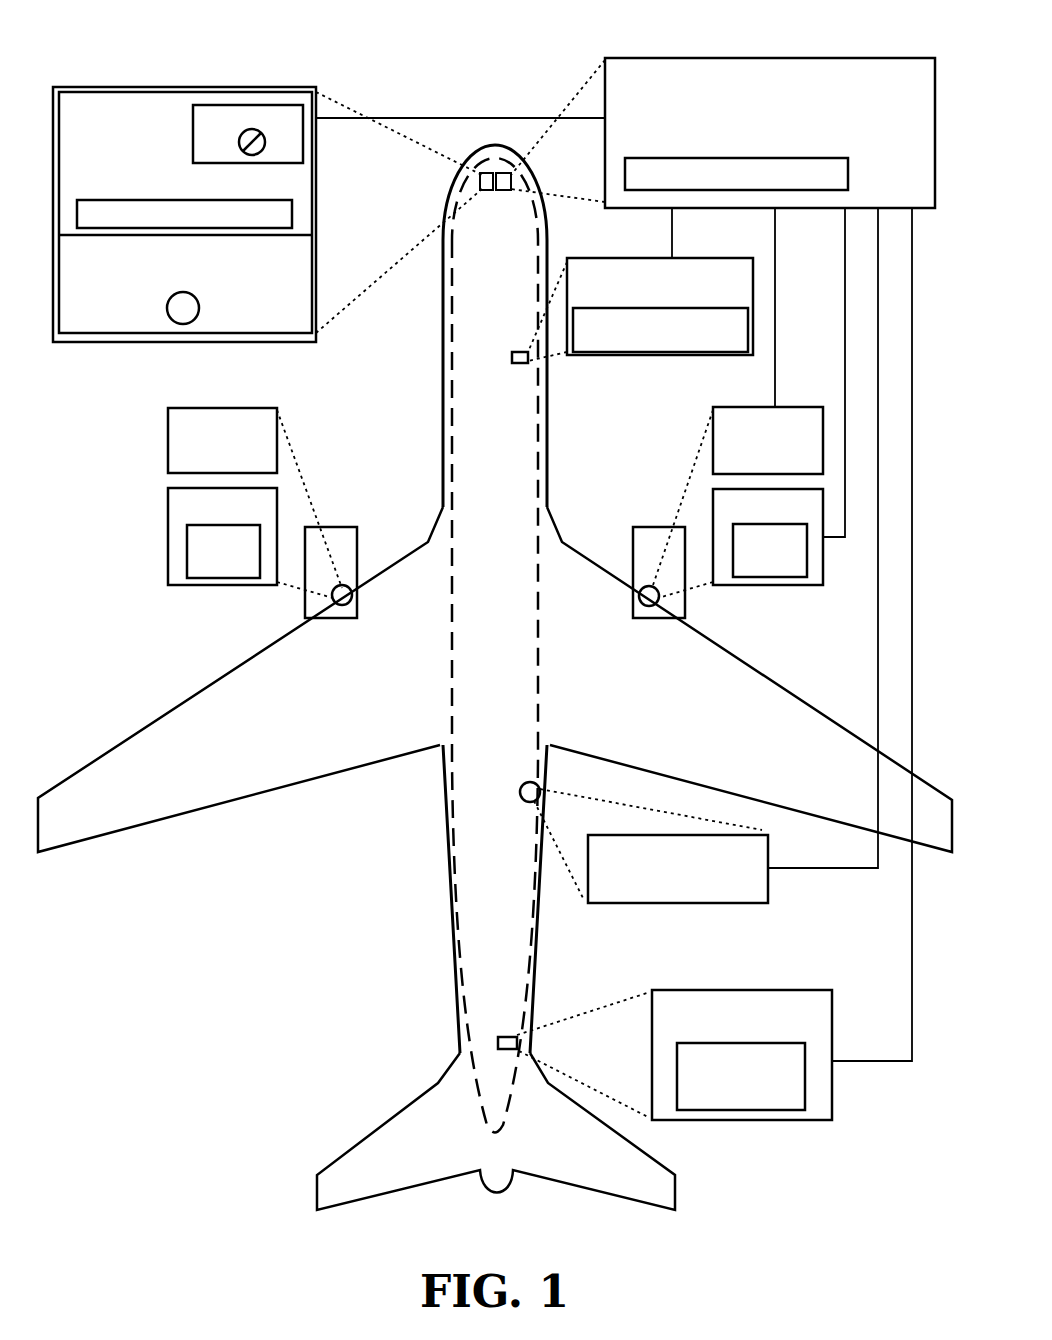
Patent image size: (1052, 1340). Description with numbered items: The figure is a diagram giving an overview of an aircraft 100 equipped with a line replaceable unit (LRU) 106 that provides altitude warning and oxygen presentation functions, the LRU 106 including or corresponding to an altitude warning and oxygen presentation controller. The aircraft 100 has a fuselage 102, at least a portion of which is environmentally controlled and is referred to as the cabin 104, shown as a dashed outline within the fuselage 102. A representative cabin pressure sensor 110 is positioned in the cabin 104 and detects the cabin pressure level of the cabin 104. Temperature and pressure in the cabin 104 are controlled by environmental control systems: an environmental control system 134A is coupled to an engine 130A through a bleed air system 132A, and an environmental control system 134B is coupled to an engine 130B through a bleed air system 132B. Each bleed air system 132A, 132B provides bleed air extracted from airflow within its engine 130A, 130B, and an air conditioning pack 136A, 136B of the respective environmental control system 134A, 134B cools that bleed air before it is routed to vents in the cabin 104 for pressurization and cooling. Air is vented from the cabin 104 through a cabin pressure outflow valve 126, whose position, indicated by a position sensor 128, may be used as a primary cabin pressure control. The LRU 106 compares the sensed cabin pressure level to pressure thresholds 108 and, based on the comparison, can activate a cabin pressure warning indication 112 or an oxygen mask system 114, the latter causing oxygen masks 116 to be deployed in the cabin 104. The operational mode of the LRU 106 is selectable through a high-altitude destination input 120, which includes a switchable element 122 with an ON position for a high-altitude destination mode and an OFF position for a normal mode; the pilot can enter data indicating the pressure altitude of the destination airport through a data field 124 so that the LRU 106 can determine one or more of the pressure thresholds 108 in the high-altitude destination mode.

The aircraft 100 is at (98, 20).
The fuselage 102 is at (443, 797).
The cabin 104 is at (457, 865).
The line replaceable unit (LRU) 106 is at (605, 58).
The pressure thresholds 108 is at (848, 172).
The cabin pressure sensor 110 is at (728, 903).
The cabin pressure warning indication 112 is at (188, 322).
The oxygen mask system 114 is at (623, 258).
The oxygen masks 116 is at (660, 352).
The high-altitude destination input 120 is at (110, 88).
The switchable element 122 is at (256, 135).
The data field 124 is at (292, 211).
The cabin pressure outflow valve 126 is at (690, 990).
The position sensor 128 is at (757, 1110).
The engine 130A is at (340, 527).
The engine 130B is at (640, 527).
The bleed air system 132A is at (200, 408).
The bleed air system 132B is at (735, 407).
The environmental control system 134A is at (177, 585).
The environmental control system 134B is at (770, 585).
The air conditioning (AC) pack 136A is at (208, 578).
The air conditioning pack 136B is at (797, 578).